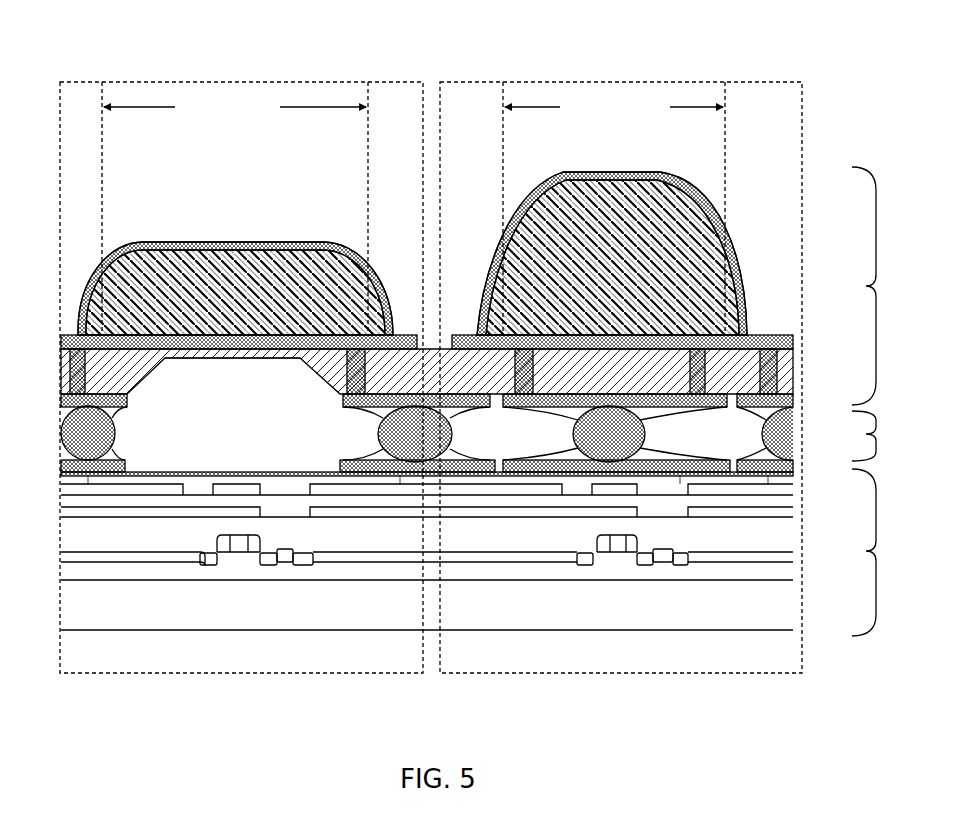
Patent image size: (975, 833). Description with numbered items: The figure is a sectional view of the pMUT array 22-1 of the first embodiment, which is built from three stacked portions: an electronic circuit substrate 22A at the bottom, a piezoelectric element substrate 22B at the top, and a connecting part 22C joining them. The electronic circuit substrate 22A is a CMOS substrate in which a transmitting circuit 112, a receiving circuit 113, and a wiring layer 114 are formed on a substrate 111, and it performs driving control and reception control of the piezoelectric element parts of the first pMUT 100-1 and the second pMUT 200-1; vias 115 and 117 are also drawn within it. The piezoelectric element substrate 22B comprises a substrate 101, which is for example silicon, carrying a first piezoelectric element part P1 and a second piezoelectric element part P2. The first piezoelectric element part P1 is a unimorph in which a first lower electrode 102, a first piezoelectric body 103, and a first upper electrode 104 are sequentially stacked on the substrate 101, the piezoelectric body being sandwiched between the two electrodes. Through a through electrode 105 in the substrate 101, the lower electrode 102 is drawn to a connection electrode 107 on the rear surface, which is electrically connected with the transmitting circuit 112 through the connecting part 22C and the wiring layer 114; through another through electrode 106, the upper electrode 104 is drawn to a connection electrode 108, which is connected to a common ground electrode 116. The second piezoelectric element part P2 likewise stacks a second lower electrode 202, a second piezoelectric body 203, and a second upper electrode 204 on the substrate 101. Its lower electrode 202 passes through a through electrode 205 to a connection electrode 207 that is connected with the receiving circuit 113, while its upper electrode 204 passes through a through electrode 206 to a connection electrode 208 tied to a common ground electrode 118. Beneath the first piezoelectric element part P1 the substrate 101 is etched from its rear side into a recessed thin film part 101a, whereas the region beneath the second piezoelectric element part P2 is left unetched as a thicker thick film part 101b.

The pMUT array 22-1 is at (778, 70).
The electronic circuit substrate 22A is at (888, 552).
The piezoelectric element substrate 22B is at (888, 286).
The connecting part 22C is at (888, 436).
The first pMUT 100-1 is at (313, 82).
The second pMUT 200-1 is at (583, 82).
The first piezoelectric element part P1 is at (386, 251).
The second piezoelectric element part P2 is at (748, 253).
The substrate 101 is at (128, 373).
The thin film part 101a is at (237, 358).
The thick film part 101b is at (560, 378).
The first lower electrode 102 is at (282, 335).
The first piezoelectric body 103 is at (231, 256).
The first upper electrode 104 is at (163, 243).
The through electrode 105 is at (338, 379).
The through electrode 106 is at (68, 352).
The connection electrode 107 is at (345, 401).
The connection electrode 108 is at (128, 407).
The substrate 111 is at (518, 618).
The transmitting circuit 112 is at (237, 553).
The receiving circuit 113 is at (617, 553).
The wiring layer 114 is at (364, 499).
The via 115 is at (400, 476).
The common electrode 116 is at (90, 476).
The via 117 is at (680, 476).
The common electrode 118 is at (768, 476).
The second lower electrode 202 is at (663, 335).
The second piezoelectric body 203 is at (607, 182).
The second upper electrode 204 is at (502, 256).
The through electrode 205 is at (697, 393).
The through electrode 206 is at (768, 340).
The connection electrode 207 is at (667, 401).
The connection electrode 208 is at (797, 420).